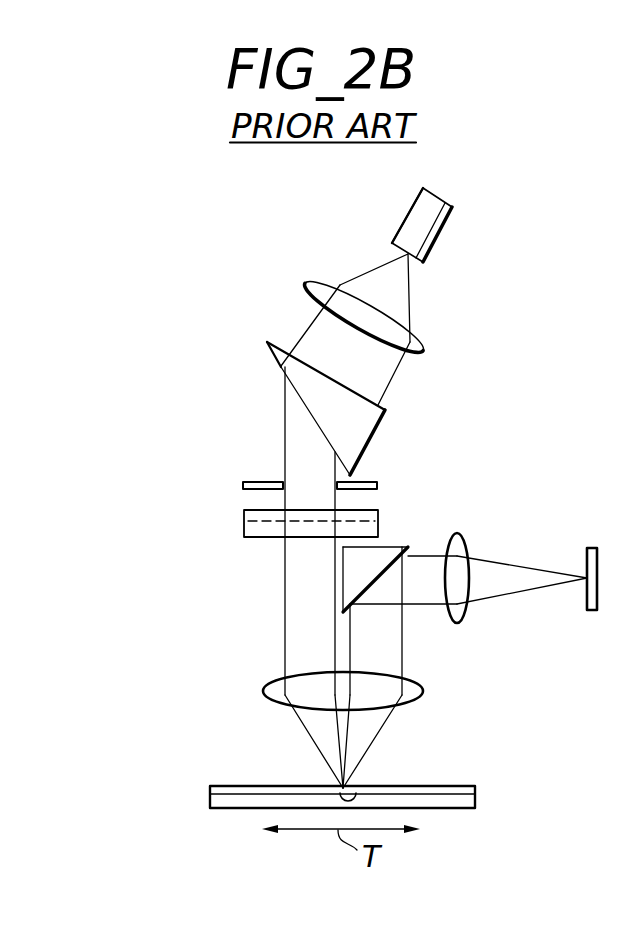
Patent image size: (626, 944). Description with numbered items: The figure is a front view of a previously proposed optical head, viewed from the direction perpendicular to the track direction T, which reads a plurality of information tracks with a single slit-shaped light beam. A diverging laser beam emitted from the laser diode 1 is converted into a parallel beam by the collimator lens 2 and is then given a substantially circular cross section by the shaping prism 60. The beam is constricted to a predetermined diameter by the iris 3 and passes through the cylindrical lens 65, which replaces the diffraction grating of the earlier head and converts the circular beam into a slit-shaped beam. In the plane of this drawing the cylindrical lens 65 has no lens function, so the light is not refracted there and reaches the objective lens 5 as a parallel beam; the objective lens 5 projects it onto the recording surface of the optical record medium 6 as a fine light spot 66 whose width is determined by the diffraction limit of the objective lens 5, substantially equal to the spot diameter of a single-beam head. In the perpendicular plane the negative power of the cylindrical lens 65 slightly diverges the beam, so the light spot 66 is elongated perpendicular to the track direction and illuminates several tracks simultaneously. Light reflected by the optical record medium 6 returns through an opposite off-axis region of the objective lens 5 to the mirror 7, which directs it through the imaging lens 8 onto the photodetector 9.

The laser diode 1 is at (447, 227).
The collimator lens 2 is at (423, 338).
The shaping prism 60 is at (267, 343).
The iris 3 is at (243, 485).
The cylindrical lens 65 is at (246, 537).
The mirror 7 is at (398, 546).
The imaging lens 8 is at (463, 611).
The photodetector 9 is at (593, 547).
The objective lens 5 is at (263, 692).
The light spot 66 is at (362, 792).
The optical record medium 6 is at (477, 790).